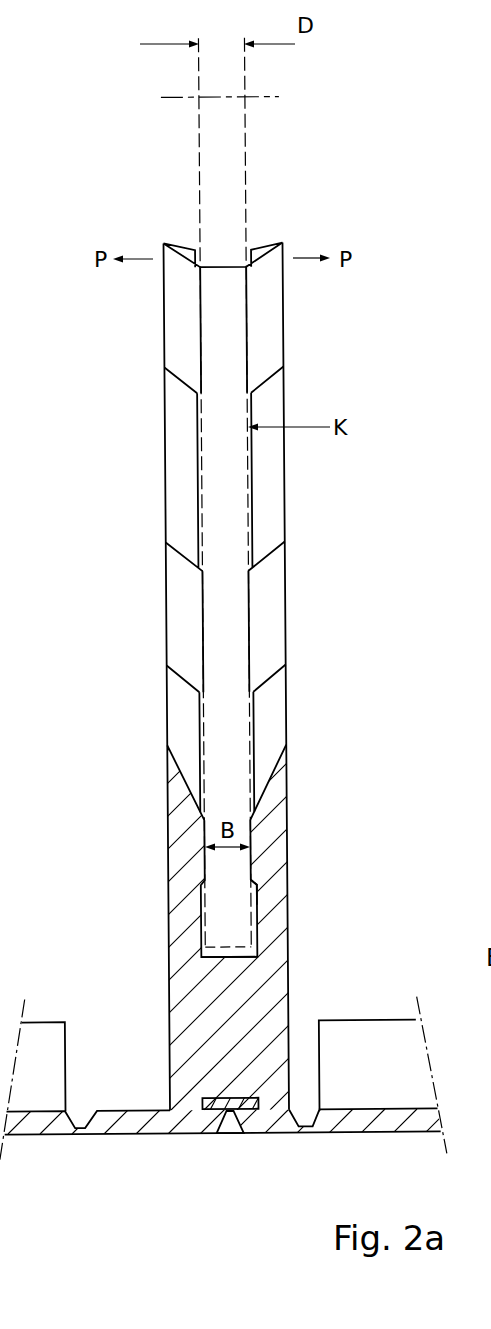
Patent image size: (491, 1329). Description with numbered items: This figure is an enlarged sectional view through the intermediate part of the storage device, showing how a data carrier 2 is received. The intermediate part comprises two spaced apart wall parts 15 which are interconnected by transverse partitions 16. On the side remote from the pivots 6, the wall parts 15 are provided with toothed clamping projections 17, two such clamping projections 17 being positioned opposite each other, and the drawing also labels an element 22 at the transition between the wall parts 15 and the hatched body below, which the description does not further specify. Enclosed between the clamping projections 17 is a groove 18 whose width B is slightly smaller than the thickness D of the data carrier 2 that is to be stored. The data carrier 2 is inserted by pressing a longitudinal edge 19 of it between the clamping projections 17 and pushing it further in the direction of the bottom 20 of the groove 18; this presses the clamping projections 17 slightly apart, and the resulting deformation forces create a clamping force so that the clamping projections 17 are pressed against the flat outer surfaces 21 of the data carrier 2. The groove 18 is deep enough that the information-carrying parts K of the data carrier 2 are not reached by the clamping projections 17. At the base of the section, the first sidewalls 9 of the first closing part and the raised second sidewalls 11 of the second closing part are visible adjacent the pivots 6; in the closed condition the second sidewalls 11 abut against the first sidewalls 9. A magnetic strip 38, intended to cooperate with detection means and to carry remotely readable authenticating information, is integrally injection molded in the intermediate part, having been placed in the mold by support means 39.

The data carrier 2 is at (222, 140).
The flat outer surfaces 21 is at (170, 201).
The toothed clamping projections 17 is at (268, 639).
The wall parts 15 is at (182, 703).
The conical transition 22 is at (183, 773).
The transverse partitions 16 is at (220, 1012).
The groove 18 is at (245, 925).
The longitudinal edge 19 is at (266, 898).
The bottom of the groove 20 is at (236, 949).
The pivots 6 is at (82, 1102).
The first sidewalls 9 is at (35, 1090).
The second sidewalls 11 is at (385, 1070).
The magnetic strip 38 is at (203, 1111).
The support means 39 is at (231, 1123).